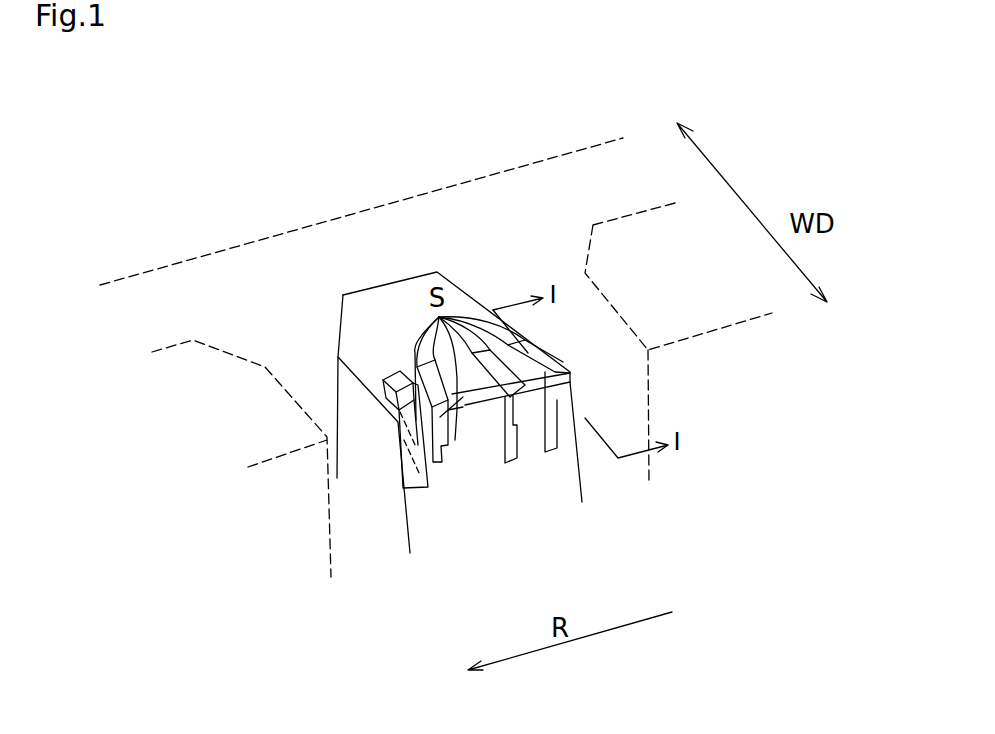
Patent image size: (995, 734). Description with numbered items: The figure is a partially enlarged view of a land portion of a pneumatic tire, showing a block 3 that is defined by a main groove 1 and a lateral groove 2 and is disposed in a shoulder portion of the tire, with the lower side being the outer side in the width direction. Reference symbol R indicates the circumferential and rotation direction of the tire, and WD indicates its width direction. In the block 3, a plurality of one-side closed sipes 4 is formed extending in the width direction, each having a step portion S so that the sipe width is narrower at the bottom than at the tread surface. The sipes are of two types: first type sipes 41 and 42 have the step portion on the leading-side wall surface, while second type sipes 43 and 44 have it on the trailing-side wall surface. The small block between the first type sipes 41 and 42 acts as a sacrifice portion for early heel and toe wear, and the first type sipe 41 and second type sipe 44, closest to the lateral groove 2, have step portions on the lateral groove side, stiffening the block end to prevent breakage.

The main groove 1 is at (624, 190).
The lateral groove 2 is at (610, 355).
The block 3 is at (468, 303).
The one-side closed sipes 4 is at (490, 464).
The first type sipe 41 is at (443, 483).
The first type sipe 42 is at (482, 470).
The second type sipe 43 is at (522, 457).
The second type sipe 44 is at (508, 416).